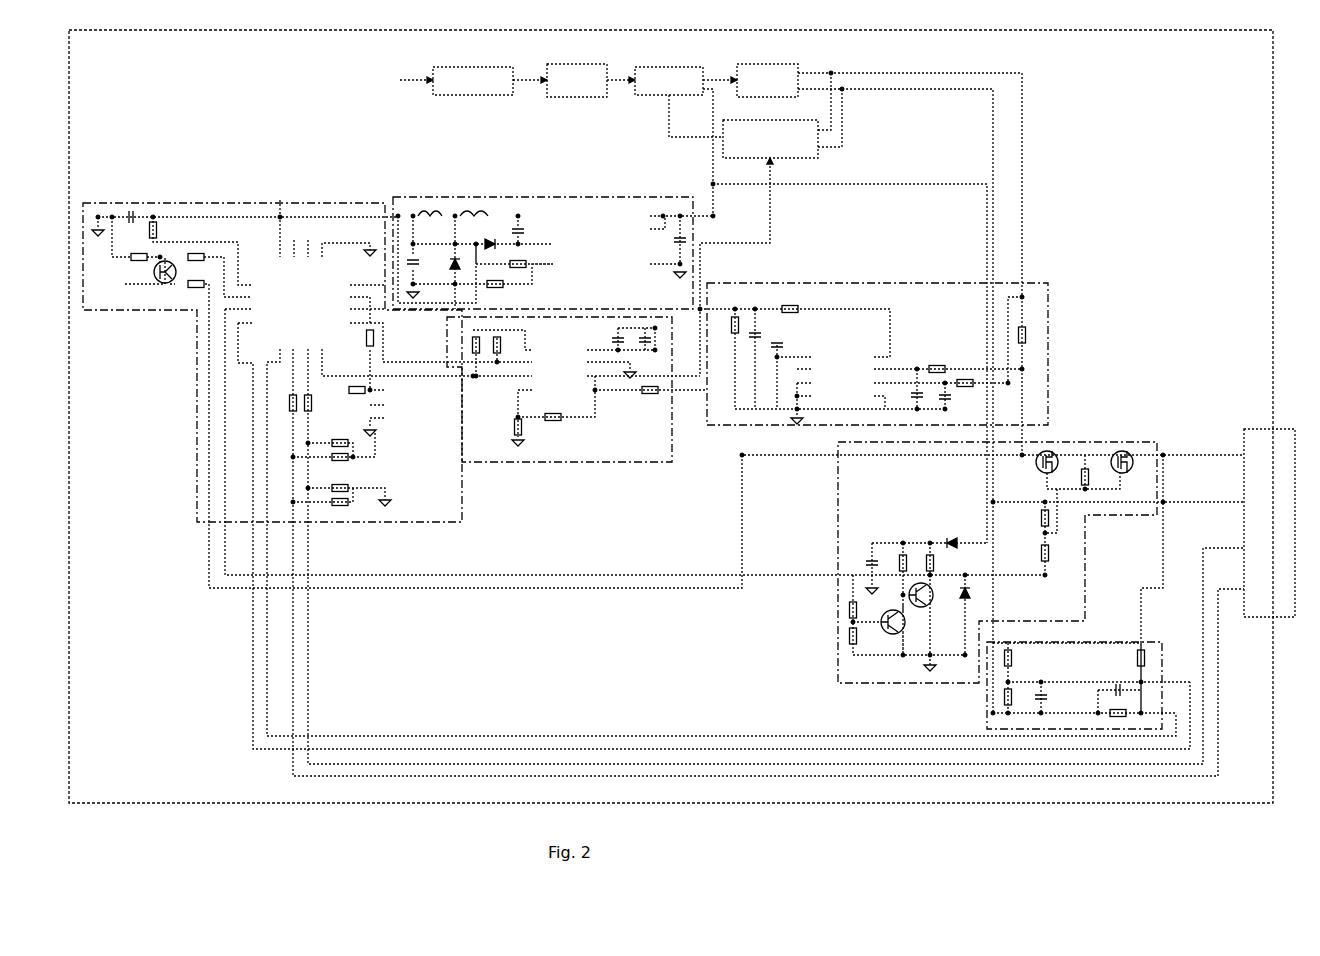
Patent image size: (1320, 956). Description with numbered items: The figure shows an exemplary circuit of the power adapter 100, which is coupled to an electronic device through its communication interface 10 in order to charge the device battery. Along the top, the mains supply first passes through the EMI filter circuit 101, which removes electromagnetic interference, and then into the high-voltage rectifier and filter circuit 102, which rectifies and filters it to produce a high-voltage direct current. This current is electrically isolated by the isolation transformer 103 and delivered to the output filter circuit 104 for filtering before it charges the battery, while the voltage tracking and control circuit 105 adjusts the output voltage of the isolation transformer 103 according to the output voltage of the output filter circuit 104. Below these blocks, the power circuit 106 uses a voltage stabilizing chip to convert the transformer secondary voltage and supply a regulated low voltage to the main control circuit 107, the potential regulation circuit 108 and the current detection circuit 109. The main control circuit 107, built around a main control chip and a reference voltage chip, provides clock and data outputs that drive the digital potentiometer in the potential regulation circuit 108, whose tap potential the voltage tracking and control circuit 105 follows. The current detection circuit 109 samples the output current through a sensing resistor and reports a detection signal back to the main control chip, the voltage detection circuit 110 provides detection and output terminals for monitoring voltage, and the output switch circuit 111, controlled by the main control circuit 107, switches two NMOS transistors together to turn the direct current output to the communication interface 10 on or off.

The power adapter 100 is at (1275, 156).
The communication interface 10 is at (1284, 429).
The EMI filter circuit 101 is at (476, 67).
The high-voltage rectifier and filter circuit 102 is at (576, 64).
The isolation transformer 103 is at (669, 67).
The output filter circuit 104 is at (767, 64).
The voltage tracking and control circuit 105 is at (771, 120).
The power circuit 106 is at (576, 197).
The main control circuit 107 is at (323, 203).
The potential regulation circuit 108 is at (566, 462).
The current detection circuit 109 is at (850, 283).
The voltage detection circuit 110 is at (1088, 642).
The output switch circuit 111 is at (1098, 442).